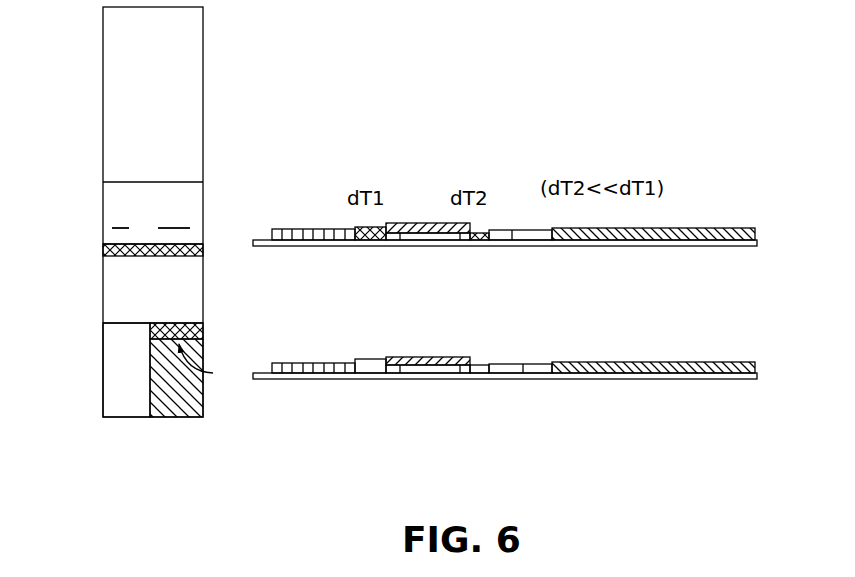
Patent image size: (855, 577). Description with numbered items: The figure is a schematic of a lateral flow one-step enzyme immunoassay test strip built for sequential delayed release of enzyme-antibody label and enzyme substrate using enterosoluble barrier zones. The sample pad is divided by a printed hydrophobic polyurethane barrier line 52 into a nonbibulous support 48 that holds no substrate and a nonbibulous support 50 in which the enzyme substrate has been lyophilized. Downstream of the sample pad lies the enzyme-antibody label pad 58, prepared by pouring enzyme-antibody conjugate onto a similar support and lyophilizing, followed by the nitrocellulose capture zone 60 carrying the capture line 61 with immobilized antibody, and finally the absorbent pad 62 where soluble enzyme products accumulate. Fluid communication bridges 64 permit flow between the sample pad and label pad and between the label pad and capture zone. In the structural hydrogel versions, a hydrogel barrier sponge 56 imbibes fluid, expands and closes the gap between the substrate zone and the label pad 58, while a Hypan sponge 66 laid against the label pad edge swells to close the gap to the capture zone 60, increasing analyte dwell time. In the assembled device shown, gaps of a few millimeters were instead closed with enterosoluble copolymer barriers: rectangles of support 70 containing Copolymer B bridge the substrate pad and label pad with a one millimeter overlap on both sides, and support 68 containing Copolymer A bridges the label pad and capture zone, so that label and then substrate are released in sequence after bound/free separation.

The nonbibulous support 48 is at (118, 379).
The nonbibulous support 50 is at (203, 418).
The hydrophobic polyurethane barrier line 52 is at (150, 418).
The structural hydrogel barrier sponge 56 is at (211, 367).
The enzyme-antibody label pad 58 is at (118, 290).
The capture zone 60 is at (118, 203).
The capture line 61 is at (178, 228).
The absorbent pad 62 is at (118, 113).
The fluid communication bridges 64 is at (397, 251).
The Hypan sponge 66 is at (100, 251).
The nonbibulous support 68 is at (482, 251).
The nonbibulous support 70 is at (368, 251).